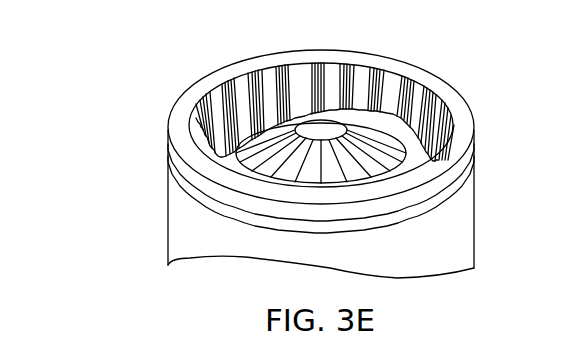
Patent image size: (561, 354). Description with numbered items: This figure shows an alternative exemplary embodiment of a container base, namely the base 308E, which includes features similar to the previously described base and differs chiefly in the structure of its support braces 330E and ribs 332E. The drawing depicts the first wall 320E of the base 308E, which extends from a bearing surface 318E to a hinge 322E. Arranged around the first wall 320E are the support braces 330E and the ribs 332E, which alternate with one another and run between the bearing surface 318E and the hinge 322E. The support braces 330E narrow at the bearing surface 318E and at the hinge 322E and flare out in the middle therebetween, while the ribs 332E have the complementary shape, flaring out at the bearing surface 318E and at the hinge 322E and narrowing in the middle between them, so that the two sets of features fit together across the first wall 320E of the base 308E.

The base 308E is at (143, 82).
The bearing surface 318E is at (227, 72).
The first wall 320E is at (284, 62).
The hinge 322E is at (433, 92).
The support braces 330E is at (367, 70).
The ribs 332E is at (337, 52).